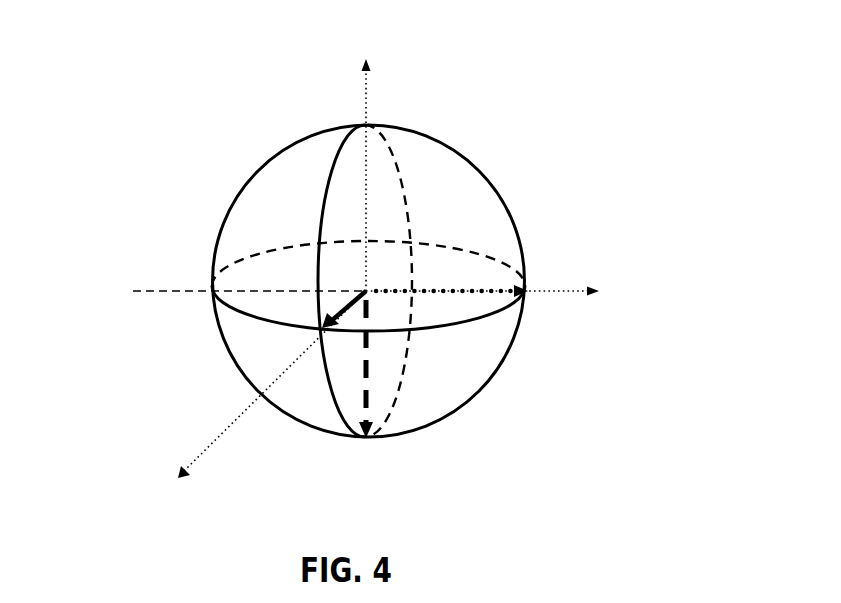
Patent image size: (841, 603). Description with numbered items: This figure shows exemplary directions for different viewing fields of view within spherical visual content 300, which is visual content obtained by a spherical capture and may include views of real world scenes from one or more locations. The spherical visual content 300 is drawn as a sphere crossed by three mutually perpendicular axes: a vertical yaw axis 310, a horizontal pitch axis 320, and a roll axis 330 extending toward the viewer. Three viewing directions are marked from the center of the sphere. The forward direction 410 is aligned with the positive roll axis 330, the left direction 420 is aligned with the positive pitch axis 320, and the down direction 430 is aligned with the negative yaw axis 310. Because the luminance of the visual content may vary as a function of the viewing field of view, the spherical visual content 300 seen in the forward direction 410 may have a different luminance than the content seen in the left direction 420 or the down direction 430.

The spherical visual content 300 is at (560, 87).
The yaw axis 310 is at (366, 158).
The pitch axis 320 is at (420, 316).
The roll axis 330 is at (242, 406).
The forward direction 410 is at (330, 320).
The left direction 420 is at (464, 287).
The down direction 430 is at (370, 377).